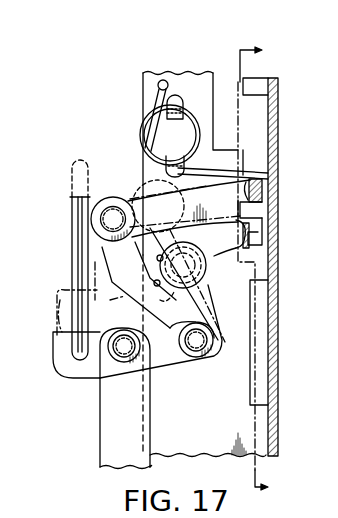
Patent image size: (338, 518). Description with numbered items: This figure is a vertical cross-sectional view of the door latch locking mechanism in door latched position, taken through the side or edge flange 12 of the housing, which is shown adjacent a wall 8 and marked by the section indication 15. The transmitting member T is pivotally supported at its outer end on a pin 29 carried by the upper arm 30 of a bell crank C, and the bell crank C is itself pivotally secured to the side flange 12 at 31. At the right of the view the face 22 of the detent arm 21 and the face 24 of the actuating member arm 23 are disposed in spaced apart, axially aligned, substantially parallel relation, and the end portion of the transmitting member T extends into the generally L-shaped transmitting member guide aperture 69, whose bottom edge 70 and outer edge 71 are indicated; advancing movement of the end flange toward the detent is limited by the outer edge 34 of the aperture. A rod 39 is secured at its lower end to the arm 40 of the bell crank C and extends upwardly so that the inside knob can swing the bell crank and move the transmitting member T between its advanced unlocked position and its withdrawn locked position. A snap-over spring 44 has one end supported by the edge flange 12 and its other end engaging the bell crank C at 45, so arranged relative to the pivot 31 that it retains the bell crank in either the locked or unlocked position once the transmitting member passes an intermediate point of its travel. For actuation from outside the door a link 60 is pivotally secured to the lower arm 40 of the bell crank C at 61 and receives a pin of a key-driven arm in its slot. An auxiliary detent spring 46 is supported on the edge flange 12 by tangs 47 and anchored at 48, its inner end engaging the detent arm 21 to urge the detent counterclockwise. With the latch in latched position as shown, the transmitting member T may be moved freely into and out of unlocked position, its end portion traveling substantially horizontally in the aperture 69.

The wall 8 is at (263, 268).
The side flange 12 is at (202, 84).
The section line 15 is at (268, 272).
The detent arm 21 is at (262, 190).
The face of detent arm 22 is at (248, 179).
The actuating member arm 23 is at (250, 245).
The face of actuating member arm 24 is at (262, 232).
The pin 29 is at (118, 209).
The upper arm of bell crank 30 is at (88, 257).
The pivot pin of bell crank 31 is at (184, 362).
The outer edge of guide aperture 34 is at (262, 210).
The rod 39 is at (74, 238).
The arm of bell crank 40 is at (78, 378).
The snap-over spring 44 is at (211, 280).
The spring engagement point on bell crank 45 is at (158, 286).
The auxiliary detent spring 46 is at (243, 166).
The tangs 47 is at (179, 104).
The anchor point of spring 48 is at (163, 80).
The link 60 is at (102, 418).
The pivot of link 61 is at (110, 368).
The transmitting member guide aperture 69 is at (249, 194).
The bottom edge of guide aperture 70 is at (225, 260).
The outer edge of guide aperture 71 is at (238, 226).
The transmitting member T is at (196, 205).
The bell crank C is at (120, 290).